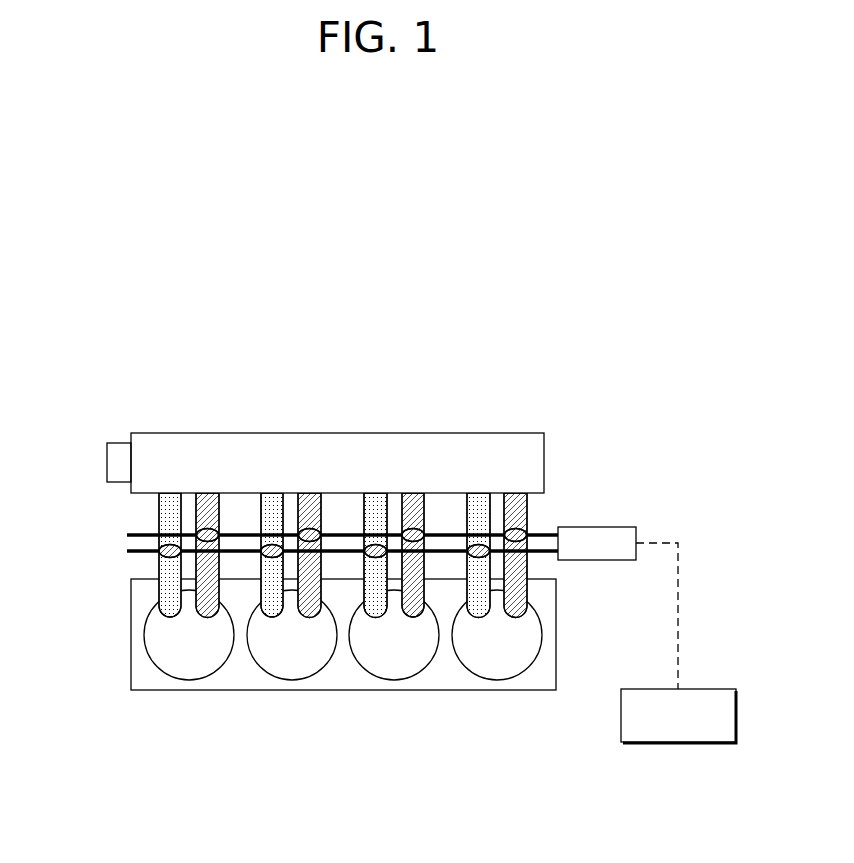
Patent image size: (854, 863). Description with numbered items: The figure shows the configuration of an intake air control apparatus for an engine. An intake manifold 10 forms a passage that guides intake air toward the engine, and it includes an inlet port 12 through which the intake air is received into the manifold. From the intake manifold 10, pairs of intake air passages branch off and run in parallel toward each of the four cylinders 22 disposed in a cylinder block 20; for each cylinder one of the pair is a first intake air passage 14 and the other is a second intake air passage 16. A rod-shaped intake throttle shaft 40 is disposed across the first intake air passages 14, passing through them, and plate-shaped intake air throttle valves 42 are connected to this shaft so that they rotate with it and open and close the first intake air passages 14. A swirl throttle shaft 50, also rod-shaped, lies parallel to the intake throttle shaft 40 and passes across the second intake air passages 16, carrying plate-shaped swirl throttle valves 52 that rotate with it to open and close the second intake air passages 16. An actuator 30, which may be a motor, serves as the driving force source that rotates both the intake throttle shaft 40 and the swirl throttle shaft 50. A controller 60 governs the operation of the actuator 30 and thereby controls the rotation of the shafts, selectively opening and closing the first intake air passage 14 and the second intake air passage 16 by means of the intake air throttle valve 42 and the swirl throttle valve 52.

The intake manifold 10 is at (327, 433).
The inlet port 12 is at (119, 443).
The first intake air passage 14 is at (399, 493).
The second intake air passage 16 is at (158, 493).
The cylinder block 20 is at (131, 633).
The cylinder 22 is at (220, 663).
The actuator 30 is at (597, 527).
The intake throttle shaft 40 is at (127, 534).
The intake air throttle valve 42 is at (413, 528).
The swirl throttle shaft 50 is at (127, 549).
The swirl throttle valve 52 is at (268, 545).
The controller 60 is at (678, 742).